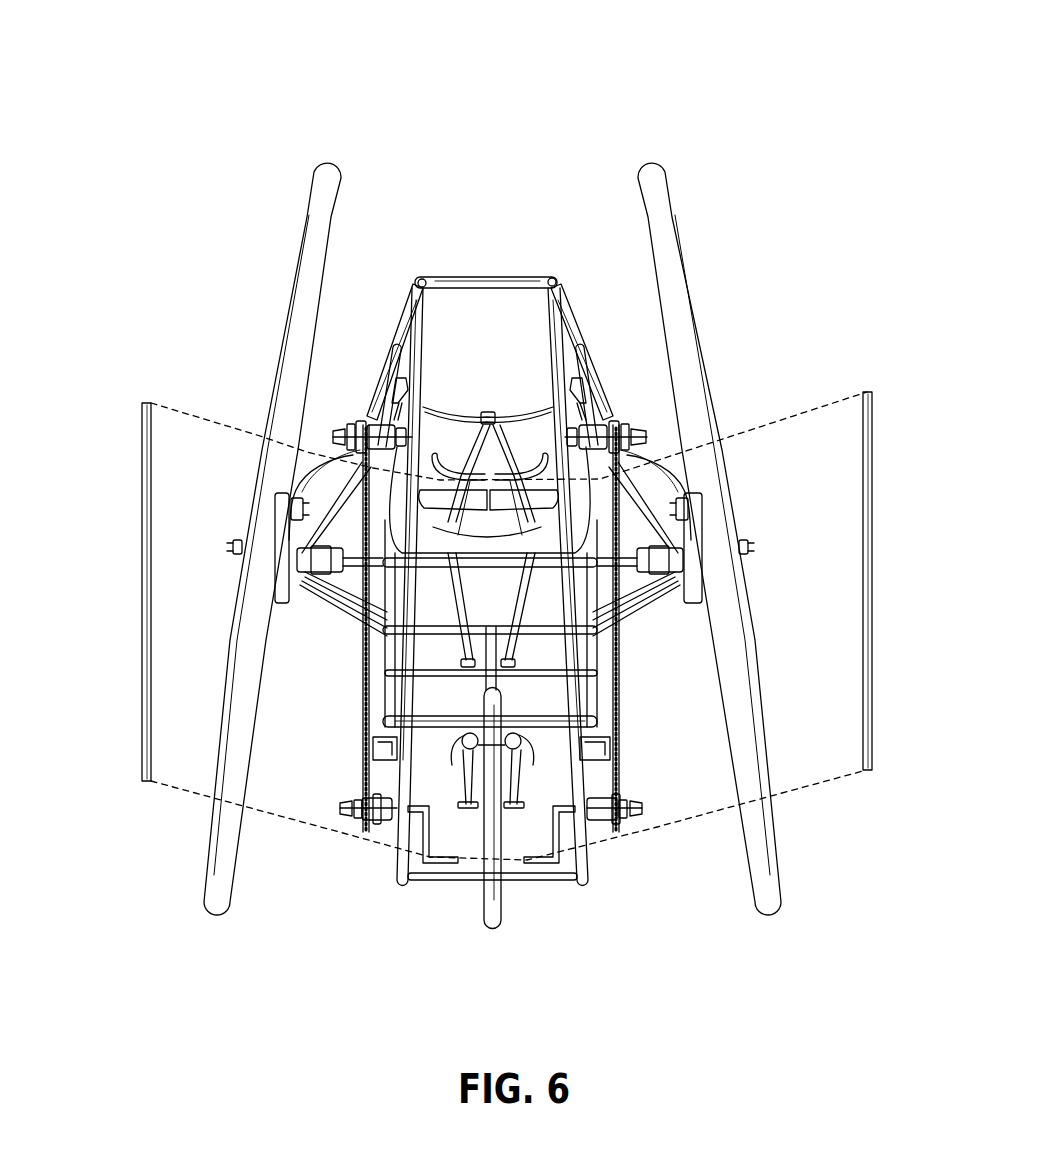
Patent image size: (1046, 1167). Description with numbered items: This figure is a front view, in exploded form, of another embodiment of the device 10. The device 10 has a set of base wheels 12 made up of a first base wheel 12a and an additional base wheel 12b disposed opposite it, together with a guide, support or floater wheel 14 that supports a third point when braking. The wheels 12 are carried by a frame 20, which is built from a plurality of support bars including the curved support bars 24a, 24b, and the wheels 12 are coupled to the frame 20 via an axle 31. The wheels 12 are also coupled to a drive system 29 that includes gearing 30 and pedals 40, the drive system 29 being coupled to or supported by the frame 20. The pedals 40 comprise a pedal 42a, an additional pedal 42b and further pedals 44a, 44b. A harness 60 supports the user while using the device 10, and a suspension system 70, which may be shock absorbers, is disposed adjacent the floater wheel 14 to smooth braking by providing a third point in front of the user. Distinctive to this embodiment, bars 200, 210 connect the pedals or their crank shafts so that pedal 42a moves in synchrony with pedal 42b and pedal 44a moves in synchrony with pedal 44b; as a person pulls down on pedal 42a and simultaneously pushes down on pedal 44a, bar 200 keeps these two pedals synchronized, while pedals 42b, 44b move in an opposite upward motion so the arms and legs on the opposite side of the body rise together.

The device 10 is at (491, 108).
The base wheels 12 is at (368, 119).
The first base wheel 12a is at (326, 173).
The additional base wheel 12b is at (664, 182).
The floater wheel 14 is at (491, 925).
The frame 20 is at (483, 264).
The curved support bar 24a is at (410, 322).
The curved support bar 24b is at (583, 333).
The drive system 29 is at (362, 371).
The gearing 30 is at (612, 420).
The axle 31 is at (313, 603).
The pedals 40 is at (340, 836).
The pedal 42a is at (447, 463).
The additional pedal 42b is at (527, 463).
The pedal 44a is at (437, 863).
The pedal 44b is at (547, 870).
The harness 60 is at (522, 418).
The suspension system 70 is at (530, 743).
The bar 200 is at (142, 480).
The bar 210 is at (867, 572).